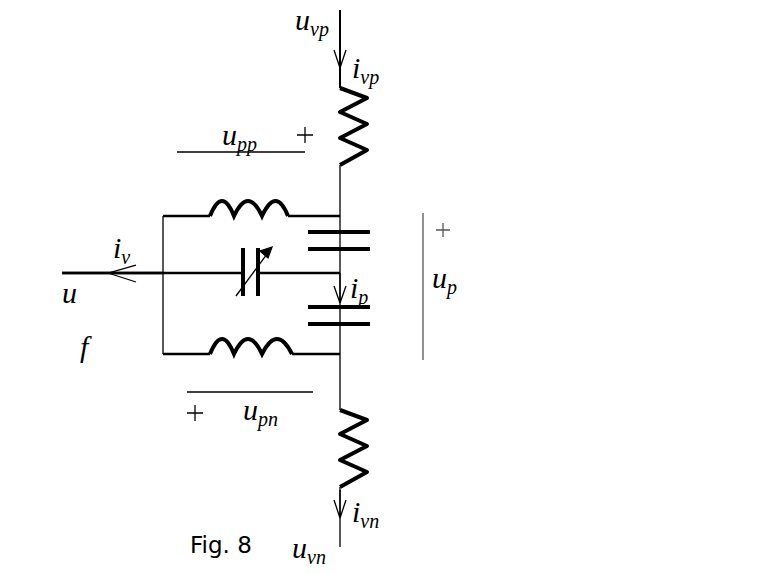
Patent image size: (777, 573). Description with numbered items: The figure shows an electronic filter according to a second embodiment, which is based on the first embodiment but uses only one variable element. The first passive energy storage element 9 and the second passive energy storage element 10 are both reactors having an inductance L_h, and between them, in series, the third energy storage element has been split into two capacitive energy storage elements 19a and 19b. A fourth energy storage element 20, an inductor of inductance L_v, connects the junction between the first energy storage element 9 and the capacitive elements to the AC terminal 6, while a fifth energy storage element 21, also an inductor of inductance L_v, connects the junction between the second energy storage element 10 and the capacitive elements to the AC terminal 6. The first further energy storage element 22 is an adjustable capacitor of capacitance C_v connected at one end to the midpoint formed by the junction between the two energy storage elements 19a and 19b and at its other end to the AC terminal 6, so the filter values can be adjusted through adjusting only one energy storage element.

The AC terminal 6 is at (87, 272).
The first passive energy storage element 9 is at (362, 95).
The second passive energy storage element 10 is at (362, 434).
The energy storage element 19a is at (340, 233).
The energy storage element 19b is at (372, 325).
The fourth energy storage element 20 is at (223, 195).
The fifth energy storage element 21 is at (217, 350).
The first further energy storage element 22 is at (241, 274).